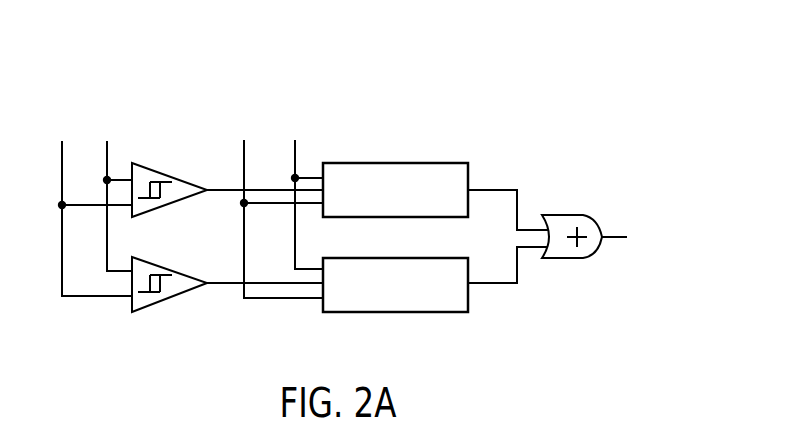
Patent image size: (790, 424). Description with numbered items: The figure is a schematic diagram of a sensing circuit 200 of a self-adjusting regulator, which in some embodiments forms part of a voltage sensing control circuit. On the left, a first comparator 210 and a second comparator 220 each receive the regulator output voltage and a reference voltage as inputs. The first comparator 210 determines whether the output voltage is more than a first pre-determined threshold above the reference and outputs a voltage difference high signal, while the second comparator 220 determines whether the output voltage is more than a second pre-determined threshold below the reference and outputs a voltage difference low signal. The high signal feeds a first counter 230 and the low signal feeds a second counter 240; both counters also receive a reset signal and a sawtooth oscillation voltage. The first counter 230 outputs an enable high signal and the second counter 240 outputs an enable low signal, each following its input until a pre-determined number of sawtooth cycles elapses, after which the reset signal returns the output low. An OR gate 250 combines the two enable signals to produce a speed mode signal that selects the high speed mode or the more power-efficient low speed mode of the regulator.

The sensing circuit 200 is at (345, 67).
The first comparator 210 is at (158, 167).
The second comparator 220 is at (168, 300).
The first counter 230 is at (415, 162).
The second counter 240 is at (400, 314).
The OR gate 250 is at (573, 215).